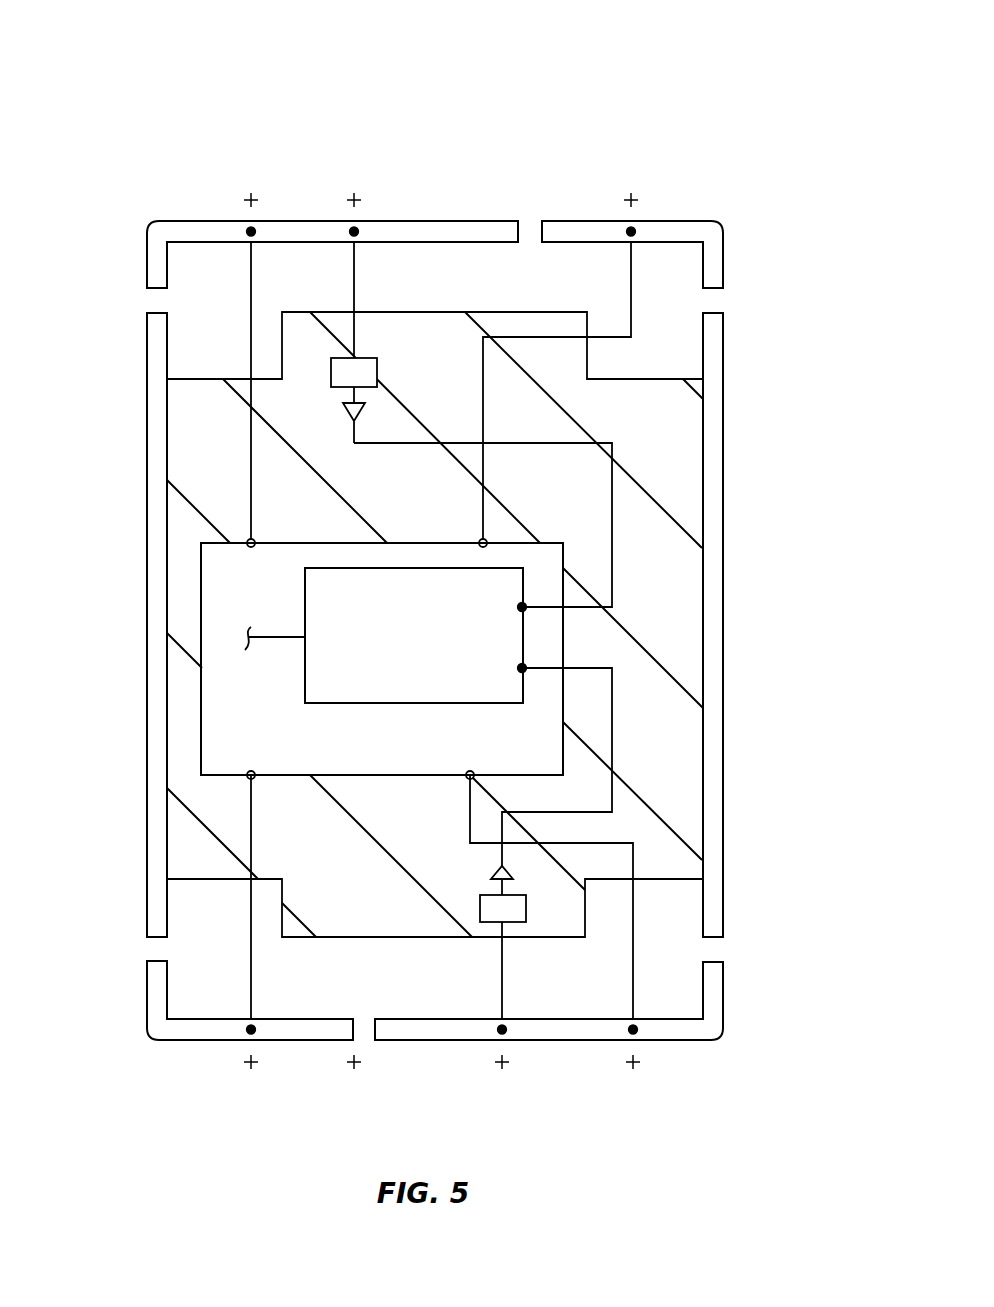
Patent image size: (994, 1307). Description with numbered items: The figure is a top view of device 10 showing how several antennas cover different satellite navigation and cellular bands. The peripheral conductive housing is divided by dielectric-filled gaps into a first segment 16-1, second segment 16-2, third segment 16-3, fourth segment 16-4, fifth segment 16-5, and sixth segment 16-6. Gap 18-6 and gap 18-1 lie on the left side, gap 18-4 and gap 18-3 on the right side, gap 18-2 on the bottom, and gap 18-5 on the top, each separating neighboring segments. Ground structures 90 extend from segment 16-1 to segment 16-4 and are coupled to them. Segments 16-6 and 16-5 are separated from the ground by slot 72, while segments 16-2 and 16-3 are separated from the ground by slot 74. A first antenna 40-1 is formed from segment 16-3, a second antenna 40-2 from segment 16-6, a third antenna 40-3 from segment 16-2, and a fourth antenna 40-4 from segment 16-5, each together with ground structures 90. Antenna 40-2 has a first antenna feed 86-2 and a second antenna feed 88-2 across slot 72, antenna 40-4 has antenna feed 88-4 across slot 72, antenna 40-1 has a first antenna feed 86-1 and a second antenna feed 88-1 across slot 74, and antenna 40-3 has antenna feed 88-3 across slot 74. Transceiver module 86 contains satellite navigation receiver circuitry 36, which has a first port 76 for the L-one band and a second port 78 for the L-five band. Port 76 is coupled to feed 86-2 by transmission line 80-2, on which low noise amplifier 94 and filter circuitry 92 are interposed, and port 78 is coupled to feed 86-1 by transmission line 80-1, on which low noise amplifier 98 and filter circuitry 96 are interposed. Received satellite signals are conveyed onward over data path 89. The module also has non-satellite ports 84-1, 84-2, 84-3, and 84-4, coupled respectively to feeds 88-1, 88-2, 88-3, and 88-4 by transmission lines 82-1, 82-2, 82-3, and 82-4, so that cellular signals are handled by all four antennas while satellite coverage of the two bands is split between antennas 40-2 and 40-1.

The device 10 is at (590, 70).
The first segment 16-1 is at (153, 688).
The second segment 16-2 is at (160, 1035).
The third segment 16-3 is at (715, 1025).
The fourth segment 16-4 is at (713, 381).
The fifth segment 16-5 is at (713, 233).
The sixth segment 16-6 is at (443, 232).
The first gap 18-1 is at (138, 945).
The second gap 18-2 is at (370, 1052).
The third gap 18-3 is at (738, 948).
The fourth gap 18-4 is at (738, 300).
The fifth gap 18-5 is at (528, 208).
The sixth gap 18-6 is at (138, 302).
The satellite navigation receiver circuitry 36 is at (305, 585).
The first antenna 40-1 is at (562, 1082).
The second antenna 40-2 is at (286, 170).
The third antenna 40-3 is at (200, 1082).
The fourth antenna 40-4 is at (660, 170).
The slot 72 is at (667, 258).
The slot 74 is at (680, 1002).
The first port 76 is at (523, 603).
The second port 78 is at (525, 668).
The transmission line 80-1 is at (613, 748).
The transmission line 80-2 is at (613, 548).
The transmission line 82-1 is at (631, 968).
The transmission line 82-2 is at (253, 432).
The transmission line 82-3 is at (253, 970).
The transmission line 82-4 is at (485, 412).
The port 84-1 is at (465, 782).
The port 84-2 is at (256, 540).
The port 84-3 is at (258, 782).
The port 84-4 is at (480, 540).
The transceiver module 86 is at (201, 586).
The first antenna feed 86-1 is at (483, 995).
The first antenna feed 86-2 is at (377, 270).
The second antenna feed 88-1 is at (652, 995).
The second antenna feed 88-2 is at (237, 255).
The antenna feed 88-3 is at (228, 990).
The antenna feed 88-4 is at (615, 278).
The data path 89 is at (283, 640).
The ground structures 90 is at (682, 653).
The filter circuitry 92 is at (378, 372).
The low noise amplifier 94 is at (362, 410).
The filter circuitry 96 is at (480, 902).
The low noise amplifier 98 is at (510, 870).